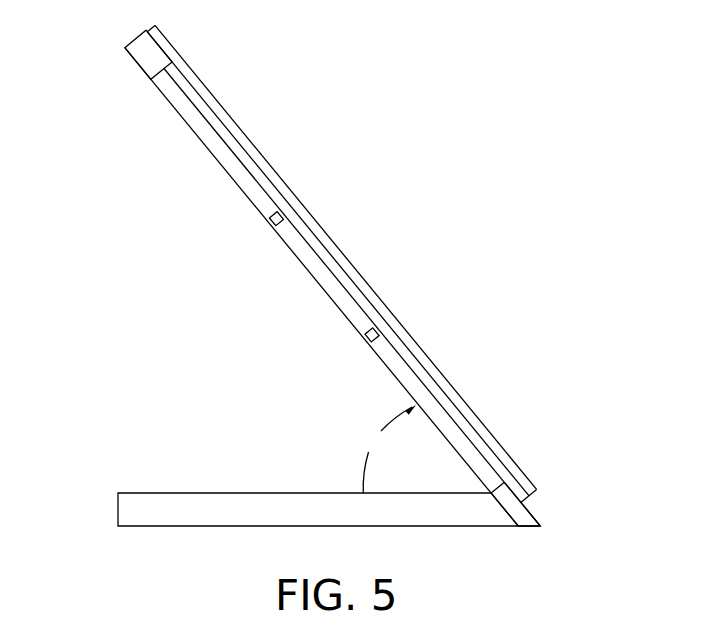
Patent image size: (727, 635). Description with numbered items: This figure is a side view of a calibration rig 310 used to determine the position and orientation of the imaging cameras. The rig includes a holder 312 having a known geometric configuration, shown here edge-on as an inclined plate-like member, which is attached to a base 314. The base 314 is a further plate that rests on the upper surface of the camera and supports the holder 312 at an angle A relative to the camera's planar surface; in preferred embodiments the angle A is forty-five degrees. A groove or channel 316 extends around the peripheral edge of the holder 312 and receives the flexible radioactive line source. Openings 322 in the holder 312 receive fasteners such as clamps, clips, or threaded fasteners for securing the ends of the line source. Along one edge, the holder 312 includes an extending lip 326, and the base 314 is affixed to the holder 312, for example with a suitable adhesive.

The calibration rig 310 is at (377, 189).
The holder 312 is at (223, 169).
The base 314 is at (170, 493).
The groove or channel 316 is at (140, 40).
The openings 322 is at (364, 338).
The extending lip 326 is at (540, 517).
The angle A is at (389, 449).